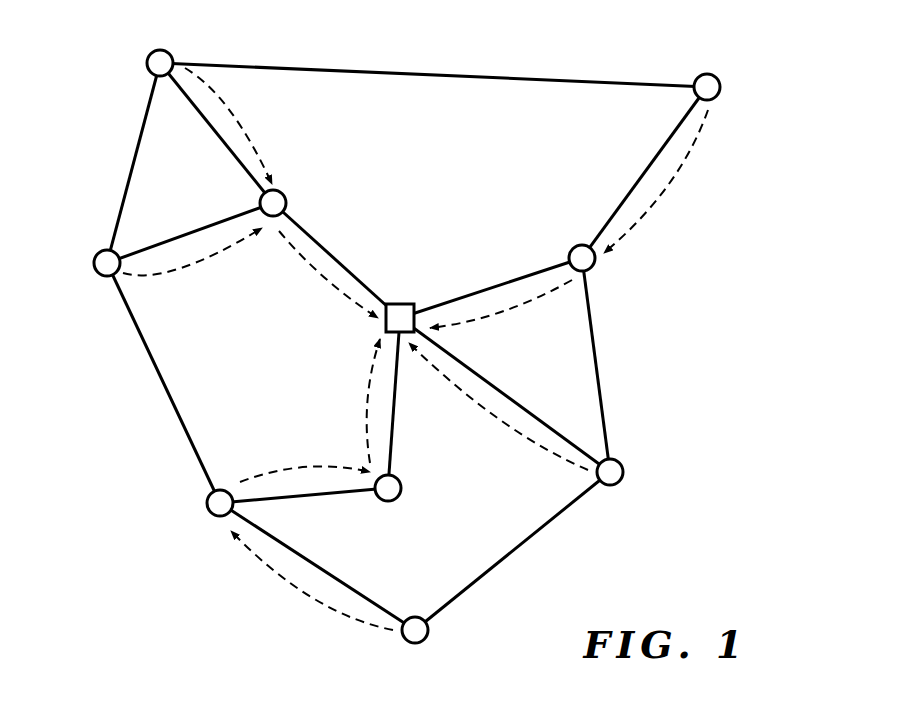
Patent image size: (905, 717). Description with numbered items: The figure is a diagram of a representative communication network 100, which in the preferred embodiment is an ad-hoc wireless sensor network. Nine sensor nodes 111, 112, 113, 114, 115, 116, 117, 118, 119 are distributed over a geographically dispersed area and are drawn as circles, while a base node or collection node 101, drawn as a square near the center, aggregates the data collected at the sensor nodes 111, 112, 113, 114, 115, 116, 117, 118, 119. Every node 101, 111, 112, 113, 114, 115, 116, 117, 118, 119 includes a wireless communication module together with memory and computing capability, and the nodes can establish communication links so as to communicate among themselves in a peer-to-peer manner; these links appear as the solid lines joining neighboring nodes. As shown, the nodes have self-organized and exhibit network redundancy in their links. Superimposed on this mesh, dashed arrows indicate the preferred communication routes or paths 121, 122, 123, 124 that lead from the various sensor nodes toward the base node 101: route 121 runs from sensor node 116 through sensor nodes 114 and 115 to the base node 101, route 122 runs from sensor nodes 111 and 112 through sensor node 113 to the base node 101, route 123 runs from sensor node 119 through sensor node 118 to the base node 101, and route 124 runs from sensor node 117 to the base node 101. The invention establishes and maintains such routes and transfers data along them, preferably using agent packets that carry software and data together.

The communication network 100 is at (693, 594).
The base node 101 is at (405, 304).
The sensor node 111 is at (162, 49).
The sensor node 112 is at (94, 265).
The sensor node 113 is at (287, 203).
The sensor node 114 is at (206, 501).
The sensor node 115 is at (401, 493).
The sensor node 116 is at (410, 645).
The sensor node 117 is at (625, 474).
The sensor node 118 is at (573, 246).
The sensor node 119 is at (709, 72).
The preferred communication route 121 is at (365, 433).
The preferred communication route 122 is at (253, 133).
The preferred communication route 123 is at (673, 183).
The preferred communication route 124 is at (513, 437).